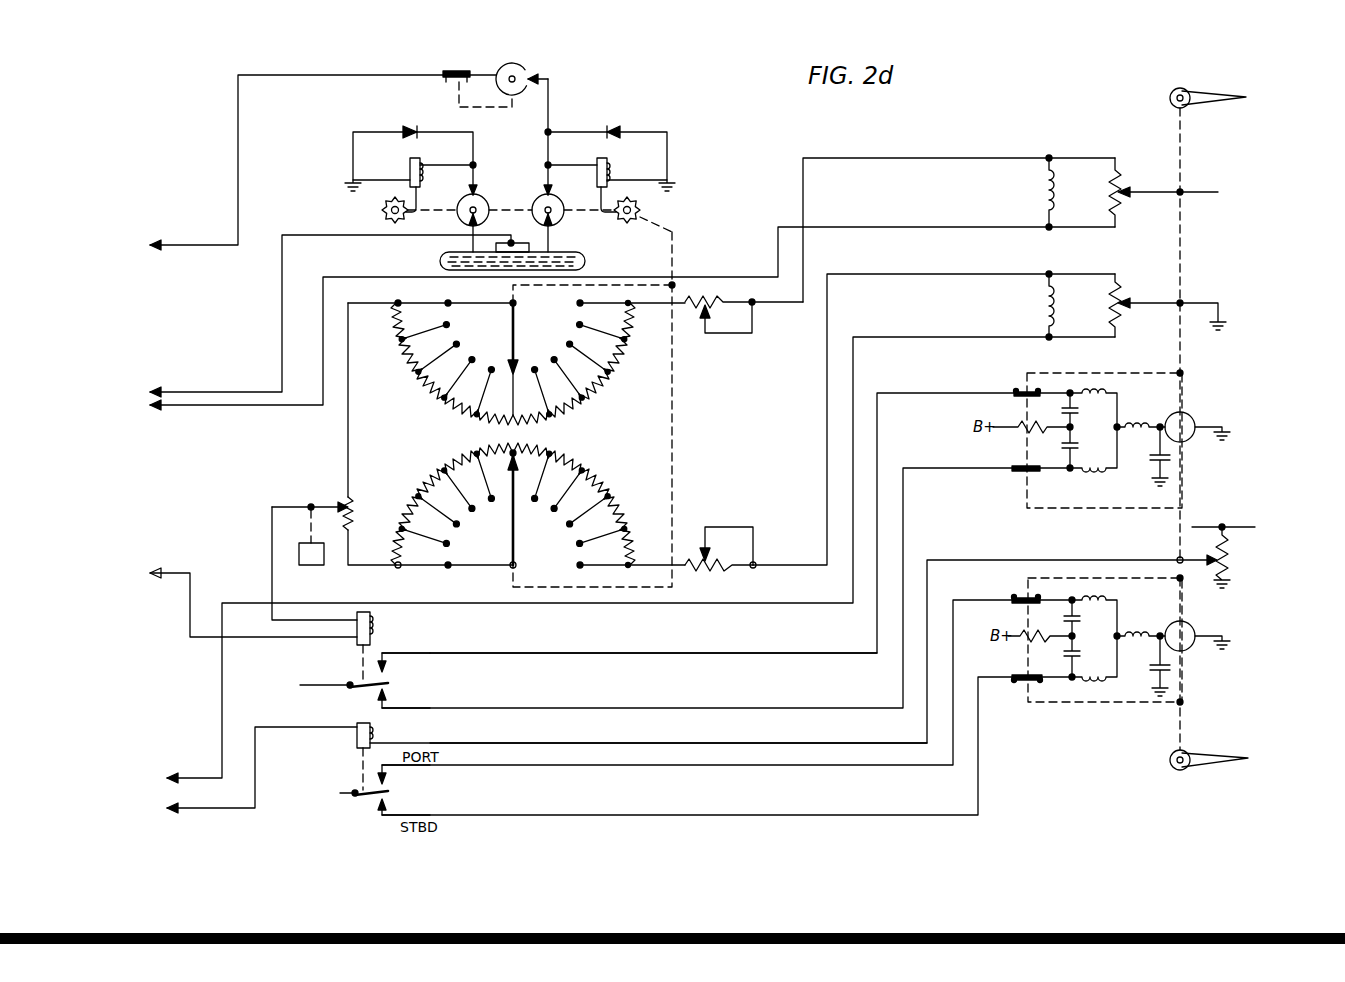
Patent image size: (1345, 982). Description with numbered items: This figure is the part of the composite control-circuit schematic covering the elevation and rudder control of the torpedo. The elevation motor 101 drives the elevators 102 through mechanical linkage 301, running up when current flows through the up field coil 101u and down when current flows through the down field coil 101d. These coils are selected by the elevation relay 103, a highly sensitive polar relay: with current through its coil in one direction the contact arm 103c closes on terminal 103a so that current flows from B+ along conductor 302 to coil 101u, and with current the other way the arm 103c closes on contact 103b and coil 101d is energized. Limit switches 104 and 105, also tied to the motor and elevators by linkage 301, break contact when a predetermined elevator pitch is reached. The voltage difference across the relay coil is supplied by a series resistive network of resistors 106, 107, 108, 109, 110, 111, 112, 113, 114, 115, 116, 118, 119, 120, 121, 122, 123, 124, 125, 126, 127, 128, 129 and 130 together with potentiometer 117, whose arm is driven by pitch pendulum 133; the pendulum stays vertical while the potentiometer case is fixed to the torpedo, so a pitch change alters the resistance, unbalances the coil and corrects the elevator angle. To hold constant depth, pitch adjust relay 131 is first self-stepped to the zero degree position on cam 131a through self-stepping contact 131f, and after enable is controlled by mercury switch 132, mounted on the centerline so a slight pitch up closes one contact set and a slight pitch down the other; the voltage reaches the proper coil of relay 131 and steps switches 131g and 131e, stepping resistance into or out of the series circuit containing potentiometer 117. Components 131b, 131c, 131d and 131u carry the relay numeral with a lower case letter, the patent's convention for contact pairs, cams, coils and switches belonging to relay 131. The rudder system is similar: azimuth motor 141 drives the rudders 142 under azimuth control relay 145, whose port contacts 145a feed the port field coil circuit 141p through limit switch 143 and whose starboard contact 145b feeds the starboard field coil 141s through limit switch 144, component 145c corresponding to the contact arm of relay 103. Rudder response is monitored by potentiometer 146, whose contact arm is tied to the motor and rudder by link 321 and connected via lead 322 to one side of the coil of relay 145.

The elevation motor 101 is at (1226, 405).
The up field coil 101u is at (1095, 392).
The down field coil 101d is at (1088, 472).
The elevators 102 is at (1203, 78).
The elevation relay 103 is at (375, 630).
The terminal 103a is at (390, 670).
The contact 103b is at (390, 696).
The contact arm 103c is at (365, 688).
The limit switch 104 is at (1018, 388).
The limit switch 105 is at (1012, 473).
The resistor 106 is at (710, 572).
The resistor 107 is at (630, 542).
The resistor 108 is at (618, 508).
The resistor 109 is at (605, 483).
The resistor 110 is at (575, 462).
The resistor 111 is at (540, 452).
The resistor 112 is at (488, 450).
The resistor 113 is at (450, 460).
The resistor 114 is at (422, 484).
The resistor 115 is at (405, 510).
The resistor 116 is at (395, 545).
The potentiometer 117 is at (342, 500).
The resistor 118 is at (398, 331).
The resistor 119 is at (411, 364).
The resistor 120 is at (427, 389).
The resistor 121 is at (459, 411).
The resistor 122 is at (517, 426).
The resistor 123 is at (556, 422).
The resistor 124 is at (586, 405).
The resistor 125 is at (608, 384).
The resistor 126 is at (623, 360).
The resistor 127 is at (634, 332).
The resistor 128 is at (710, 303).
The resistor 129 is at (1125, 185).
The resistor 130 is at (1125, 297).
The pitch adjust relay 131 is at (520, 156).
The cam 131a is at (527, 70).
The switch 131b is at (460, 219).
The switch 131c is at (560, 219).
The down solenoid 131d is at (410, 166).
The stepping switch 131e is at (518, 559).
The self-stepping contact 131f is at (445, 70).
The stepping switch 131g is at (516, 324).
The up solenoid 131u is at (608, 166).
The mercury switch 132 is at (586, 261).
The pitch pendulum 133 is at (310, 568).
The azimuth motor 141 is at (1197, 621).
The port field coil circuit 141p is at (1093, 592).
The starboard field coil 141s is at (1097, 684).
The rudders 142 is at (1192, 782).
The limit switch 143 is at (1015, 596).
The limit switch 144 is at (1020, 684).
The azimuth control relay 145 is at (375, 737).
The port contacts 145a is at (390, 781).
The starboard contact 145b is at (390, 803).
The relay switch arm 145c is at (362, 800).
The potentiometer 146 is at (1228, 563).
The mechanical linkage 301 is at (1185, 243).
The conductor 302 is at (507, 652).
The link 321 is at (1188, 690).
The lead 322 is at (542, 755).